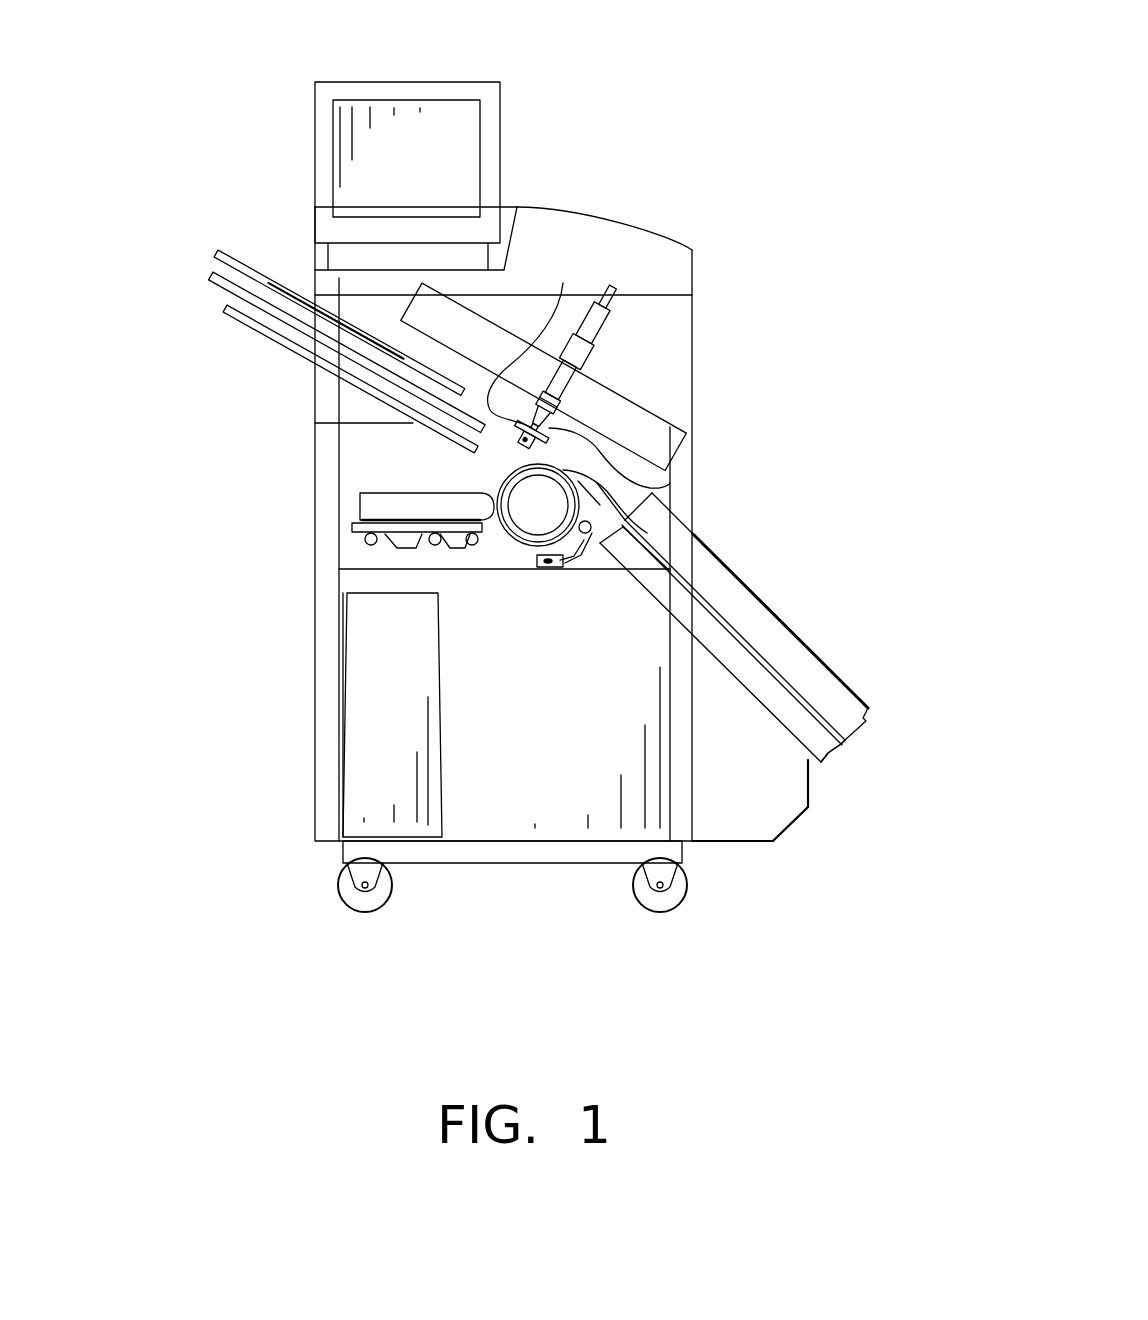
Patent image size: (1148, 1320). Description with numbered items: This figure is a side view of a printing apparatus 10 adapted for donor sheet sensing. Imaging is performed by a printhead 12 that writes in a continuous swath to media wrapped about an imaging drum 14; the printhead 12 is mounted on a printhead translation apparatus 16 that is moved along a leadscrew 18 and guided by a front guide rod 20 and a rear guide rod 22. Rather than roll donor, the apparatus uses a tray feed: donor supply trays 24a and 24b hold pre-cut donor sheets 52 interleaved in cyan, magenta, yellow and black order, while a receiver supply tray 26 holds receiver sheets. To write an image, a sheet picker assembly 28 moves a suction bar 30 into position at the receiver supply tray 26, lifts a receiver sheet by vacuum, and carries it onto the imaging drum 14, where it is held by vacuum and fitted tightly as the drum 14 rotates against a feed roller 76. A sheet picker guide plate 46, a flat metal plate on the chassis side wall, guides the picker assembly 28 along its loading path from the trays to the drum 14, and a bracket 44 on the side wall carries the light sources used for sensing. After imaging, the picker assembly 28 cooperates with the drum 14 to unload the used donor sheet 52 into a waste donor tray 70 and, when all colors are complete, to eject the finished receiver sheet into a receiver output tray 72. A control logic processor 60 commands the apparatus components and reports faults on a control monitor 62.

The printing apparatus 10 is at (233, 701).
The printhead 12 is at (360, 507).
The imaging drum 14 is at (650, 505).
The printhead translation apparatus 16 is at (352, 527).
The leadscrew 18 is at (437, 540).
The front guide rod 20 is at (468, 540).
The rear guide rod 22 is at (368, 540).
The donor supply tray 24a is at (218, 250).
The donor supply tray 24b is at (214, 273).
The receiver supply tray 26 is at (227, 305).
The sheet picker assembly 28 is at (597, 358).
The suction bar 30 is at (567, 420).
The bracket 44 is at (517, 443).
The sheet picker guide plate 46 is at (673, 427).
The donor sheet 52 is at (538, 341).
The control logic processor 60 is at (347, 730).
The control monitor 62 is at (472, 82).
The waste donor tray 70 is at (822, 760).
The receiver output tray 72 is at (826, 672).
The feed roller 76 is at (587, 533).